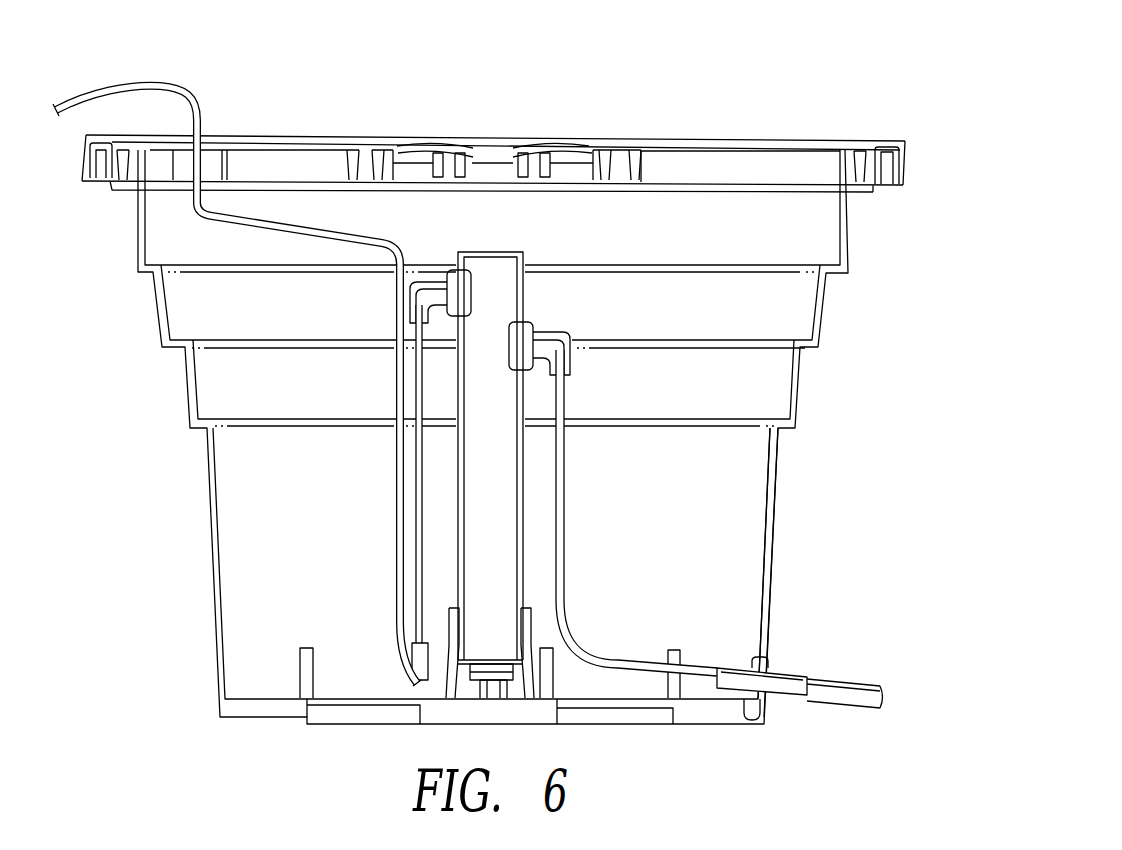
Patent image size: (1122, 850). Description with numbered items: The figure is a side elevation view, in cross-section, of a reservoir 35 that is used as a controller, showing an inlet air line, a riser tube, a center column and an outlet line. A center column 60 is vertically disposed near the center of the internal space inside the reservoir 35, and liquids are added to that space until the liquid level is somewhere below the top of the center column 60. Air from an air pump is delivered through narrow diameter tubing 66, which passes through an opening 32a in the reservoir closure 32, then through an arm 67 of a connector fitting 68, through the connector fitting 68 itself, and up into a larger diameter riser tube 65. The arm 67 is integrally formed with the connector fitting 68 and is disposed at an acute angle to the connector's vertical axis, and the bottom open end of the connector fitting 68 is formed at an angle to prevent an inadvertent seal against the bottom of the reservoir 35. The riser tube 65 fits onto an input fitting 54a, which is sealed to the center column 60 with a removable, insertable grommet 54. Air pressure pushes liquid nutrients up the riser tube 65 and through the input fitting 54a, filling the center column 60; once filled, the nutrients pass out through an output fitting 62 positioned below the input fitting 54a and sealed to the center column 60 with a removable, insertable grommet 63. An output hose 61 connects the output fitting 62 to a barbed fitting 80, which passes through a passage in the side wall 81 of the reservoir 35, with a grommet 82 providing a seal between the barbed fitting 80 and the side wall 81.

The reservoir 35 is at (536, 437).
The reservoir closure 32 is at (493, 124).
The opening 32a is at (222, 135).
The narrow diameter tubing 66 is at (237, 355).
The grommet 54 is at (401, 263).
The input fitting 54a is at (412, 310).
The center column 60 is at (507, 262).
The grommet 63 is at (527, 327).
The output fitting 62 is at (573, 367).
The riser tube 65 is at (420, 493).
The output hose 61 is at (628, 668).
The arm 67 is at (394, 645).
The connector fitting 68 is at (416, 687).
The barbed fitting 80 is at (781, 667).
The side wall 81 is at (767, 543).
The grommet 82 is at (746, 722).